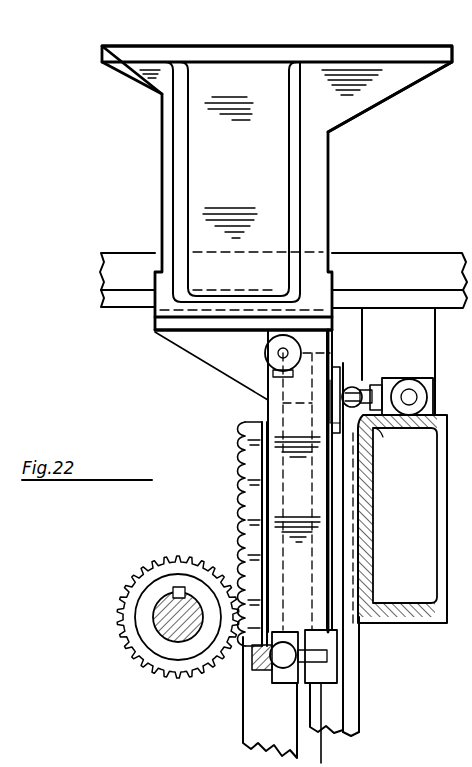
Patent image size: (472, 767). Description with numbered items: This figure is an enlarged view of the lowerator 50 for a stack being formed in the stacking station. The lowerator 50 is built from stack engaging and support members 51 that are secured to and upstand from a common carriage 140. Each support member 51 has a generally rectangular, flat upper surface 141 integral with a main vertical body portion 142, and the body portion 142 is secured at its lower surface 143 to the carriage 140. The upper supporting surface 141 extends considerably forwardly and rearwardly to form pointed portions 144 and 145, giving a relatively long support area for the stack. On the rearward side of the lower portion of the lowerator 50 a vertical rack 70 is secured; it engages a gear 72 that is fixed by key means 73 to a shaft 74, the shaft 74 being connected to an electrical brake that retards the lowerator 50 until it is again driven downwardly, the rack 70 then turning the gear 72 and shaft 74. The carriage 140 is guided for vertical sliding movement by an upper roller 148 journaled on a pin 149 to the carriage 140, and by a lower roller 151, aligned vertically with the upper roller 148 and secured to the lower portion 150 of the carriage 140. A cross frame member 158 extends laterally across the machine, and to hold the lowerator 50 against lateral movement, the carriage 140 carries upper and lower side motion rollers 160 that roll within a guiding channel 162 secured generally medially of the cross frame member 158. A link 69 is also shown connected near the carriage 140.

The lowerator 50 is at (255, 173).
The stack engaging and support member 51 is at (251, 190).
The link 69 is at (222, 363).
The vertical rack 70 is at (242, 465).
The gear 72 is at (140, 573).
The key means 73 is at (178, 590).
The shaft 74 is at (162, 620).
The carriage 140 is at (183, 327).
The upper surface 141 is at (133, 53).
The main vertical body portion 142 is at (207, 132).
The lower surface 143 is at (205, 318).
The pointed portion 144 is at (145, 70).
The pointed portion 145 is at (405, 75).
The upper roller 148 is at (268, 348).
The pin 149 is at (283, 353).
The lower portion 150 is at (280, 632).
The lower roller 151 is at (260, 668).
The cross frame member 158 is at (370, 538).
The side motion roller 160 is at (347, 353).
The guiding channel 162 is at (327, 705).